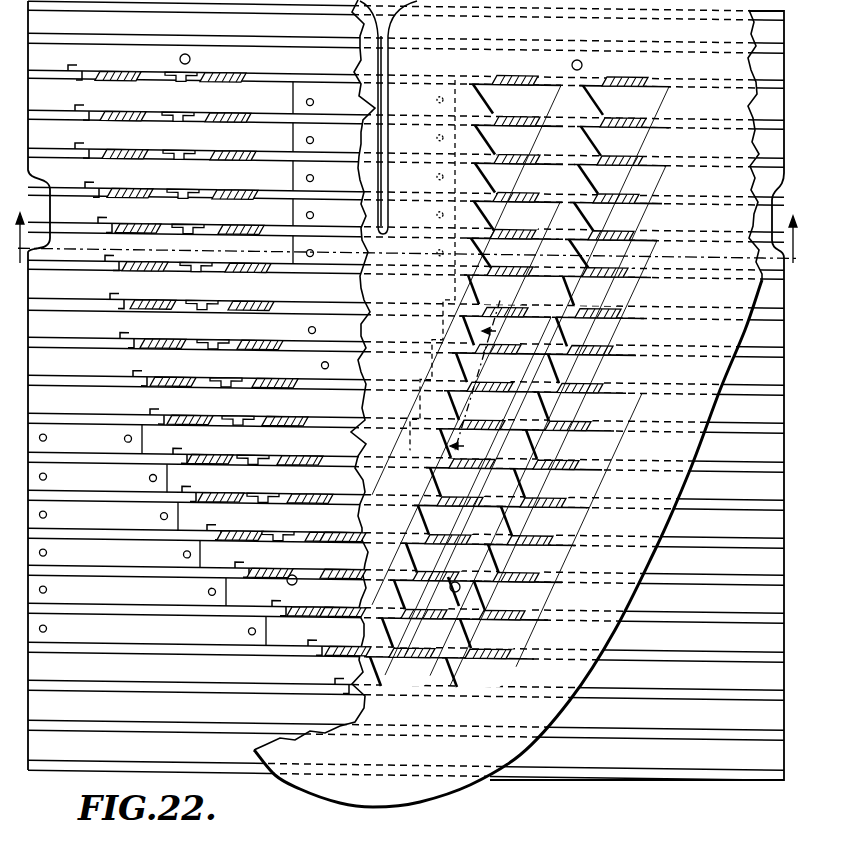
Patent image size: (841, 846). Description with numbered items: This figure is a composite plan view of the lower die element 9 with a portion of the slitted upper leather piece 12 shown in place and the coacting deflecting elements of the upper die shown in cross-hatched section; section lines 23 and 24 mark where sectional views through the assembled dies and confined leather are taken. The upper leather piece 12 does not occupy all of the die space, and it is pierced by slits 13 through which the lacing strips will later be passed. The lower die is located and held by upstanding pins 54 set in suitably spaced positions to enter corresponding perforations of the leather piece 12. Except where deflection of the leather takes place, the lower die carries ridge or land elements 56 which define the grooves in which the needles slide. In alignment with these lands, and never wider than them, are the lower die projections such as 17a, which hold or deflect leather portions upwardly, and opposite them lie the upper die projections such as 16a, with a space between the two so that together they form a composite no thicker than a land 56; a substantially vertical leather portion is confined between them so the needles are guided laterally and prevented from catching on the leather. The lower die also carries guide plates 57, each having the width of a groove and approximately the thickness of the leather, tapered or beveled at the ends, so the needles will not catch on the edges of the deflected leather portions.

The lower die element 9 is at (589, 778).
The upper leather piece 12 is at (470, 784).
The slits 13 is at (478, 592).
The upper die projection 16a is at (310, 637).
The lower die projection 17a is at (333, 601).
The section line 23- 23 is at (403, 230).
The section line 24- 24 is at (485, 378).
The upstanding pins 54 is at (461, 592).
The ridge or land elements 56 is at (741, 493).
The plate 57 is at (228, 594).